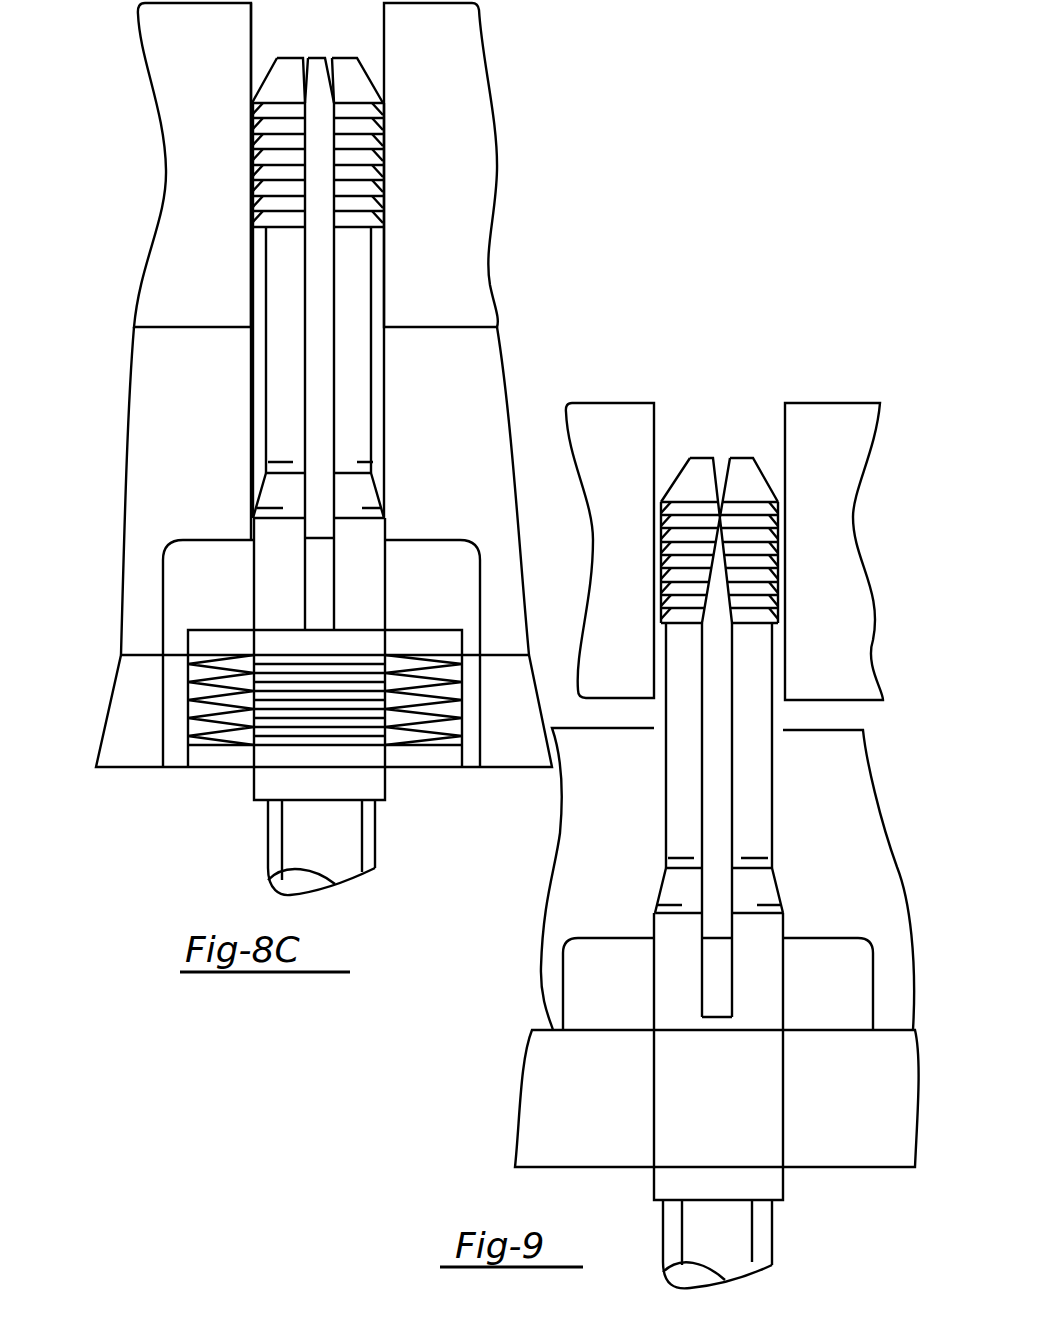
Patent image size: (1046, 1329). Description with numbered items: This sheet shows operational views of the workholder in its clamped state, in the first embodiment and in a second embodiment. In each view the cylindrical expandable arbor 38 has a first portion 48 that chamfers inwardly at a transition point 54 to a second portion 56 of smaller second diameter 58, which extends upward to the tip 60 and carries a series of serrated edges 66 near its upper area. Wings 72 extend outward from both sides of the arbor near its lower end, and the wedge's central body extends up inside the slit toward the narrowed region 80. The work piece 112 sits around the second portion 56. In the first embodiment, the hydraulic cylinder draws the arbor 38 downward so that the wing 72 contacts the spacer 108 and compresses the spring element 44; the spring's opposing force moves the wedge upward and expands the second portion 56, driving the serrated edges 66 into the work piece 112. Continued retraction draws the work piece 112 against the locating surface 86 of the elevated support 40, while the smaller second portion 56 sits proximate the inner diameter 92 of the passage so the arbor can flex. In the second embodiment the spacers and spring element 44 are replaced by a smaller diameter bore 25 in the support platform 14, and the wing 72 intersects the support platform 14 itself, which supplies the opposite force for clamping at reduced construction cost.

In FIG. 9, the support platform 14 is at (537, 1088).
In FIG. 9, the smaller diameter bore 25 is at (813, 1122).
In FIG. 8C, the cylindrical expandable arbor 38 is at (358, 450).
In FIG. 9, the cylindrical expandable arbor 38 is at (743, 835).
In FIG. 8C, the elevated support 40 is at (146, 467).
In FIG. 8C, the spring element 44 is at (441, 708).
In FIG. 8C, the first portion 48 is at (360, 557).
In FIG. 9, the transition point 54 is at (654, 913).
In FIG. 8C, the second portion 56 is at (358, 363).
In FIG. 9, the second portion 56 is at (753, 778).
In FIG. 9, the second diameter 58 is at (635, 714).
In FIG. 8C, the tip 60 is at (295, 58).
In FIG. 9, the tip 60 is at (707, 457).
In FIG. 8C, the serrated edges 66 is at (372, 143).
In FIG. 9, the serrated edges 66 is at (767, 570).
In FIG. 8C, the wings 72 is at (320, 602).
In FIG. 9, the wings 72 is at (718, 988).
In FIG. 8C, the narrowed region 80 is at (287, 157).
In FIG. 9, the narrowed region 80 is at (668, 582).
In FIG. 8C, the locating surface 86 is at (470, 333).
In FIG. 8C, the inner diameter 92 is at (213, 433).
In FIG. 8C, the spacer 108 is at (438, 640).
In FIG. 8C, the work piece 112 is at (490, 272).
In FIG. 9, the work piece 112 is at (603, 506).